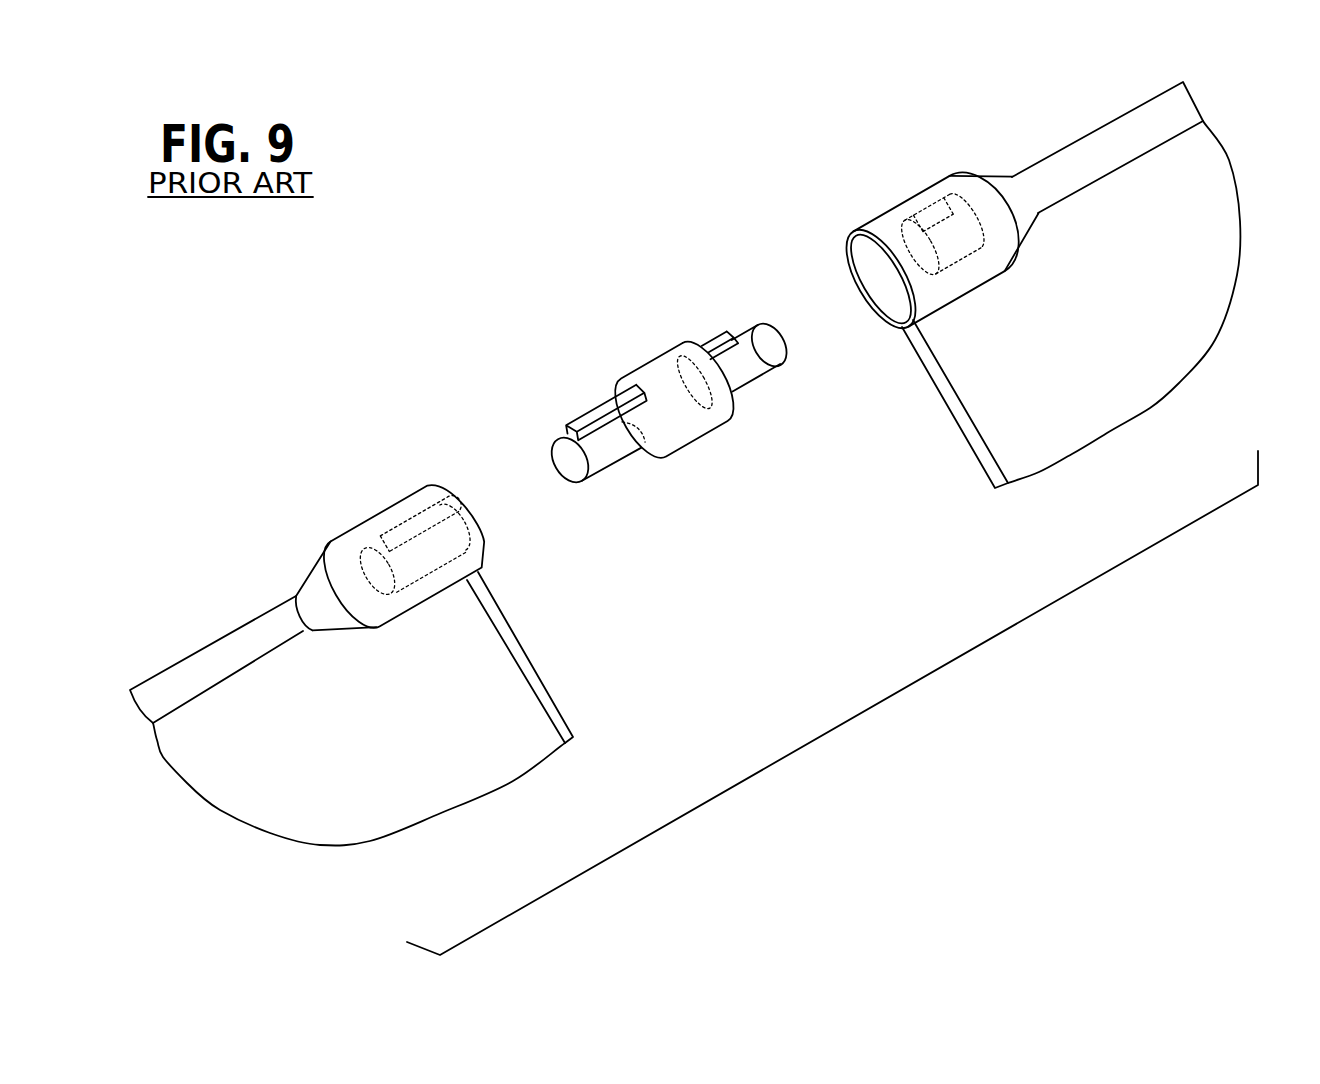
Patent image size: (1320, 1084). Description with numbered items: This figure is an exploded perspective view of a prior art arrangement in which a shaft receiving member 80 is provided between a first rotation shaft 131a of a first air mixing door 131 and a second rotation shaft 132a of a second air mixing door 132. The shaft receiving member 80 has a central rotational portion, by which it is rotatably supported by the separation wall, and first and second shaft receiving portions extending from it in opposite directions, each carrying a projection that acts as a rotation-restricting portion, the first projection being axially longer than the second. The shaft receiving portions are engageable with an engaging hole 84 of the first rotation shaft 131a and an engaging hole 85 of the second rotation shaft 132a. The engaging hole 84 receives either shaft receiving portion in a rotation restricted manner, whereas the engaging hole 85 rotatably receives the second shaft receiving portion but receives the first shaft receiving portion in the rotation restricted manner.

The shaft receiving member 80 is at (669, 421).
The engaging hole 84 is at (458, 530).
The engaging hole 85 is at (893, 233).
The first air mixing door 131 is at (443, 756).
The first rotation shaft 131a is at (209, 667).
The second air mixing door 132 is at (1151, 340).
The second rotation shaft 132a is at (1104, 146).